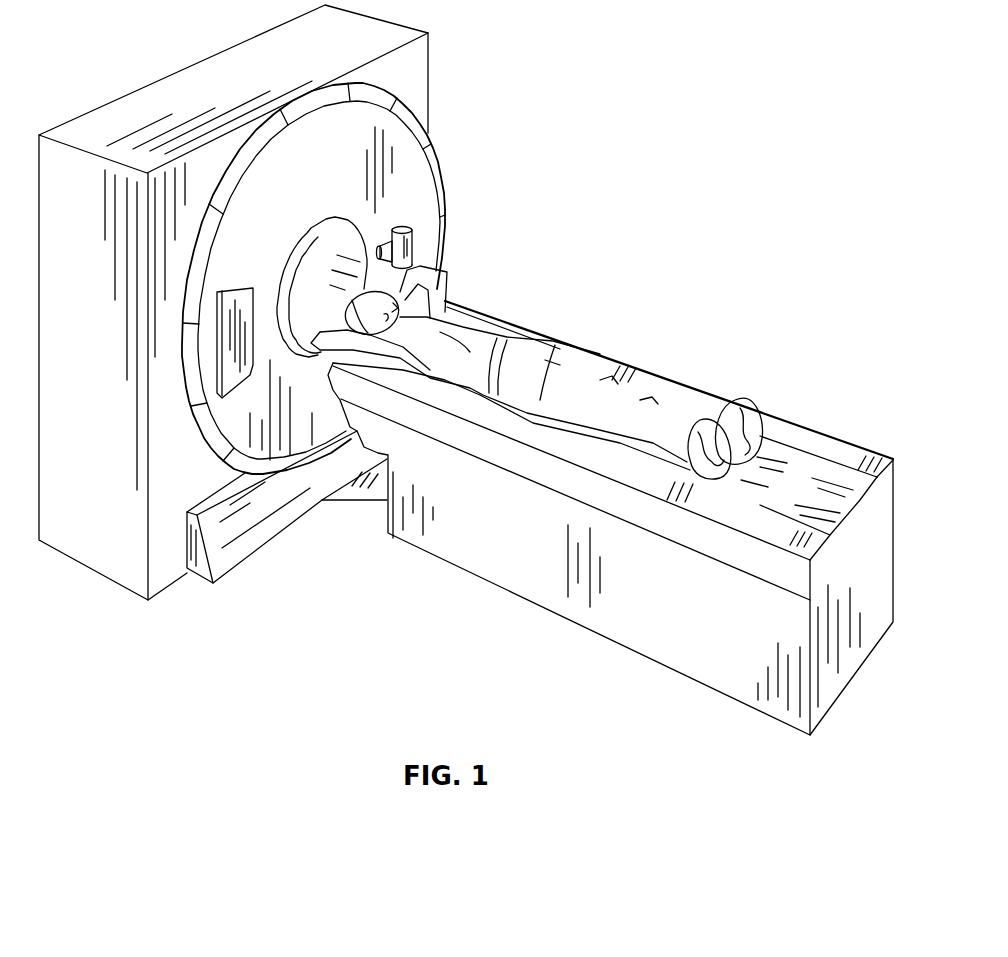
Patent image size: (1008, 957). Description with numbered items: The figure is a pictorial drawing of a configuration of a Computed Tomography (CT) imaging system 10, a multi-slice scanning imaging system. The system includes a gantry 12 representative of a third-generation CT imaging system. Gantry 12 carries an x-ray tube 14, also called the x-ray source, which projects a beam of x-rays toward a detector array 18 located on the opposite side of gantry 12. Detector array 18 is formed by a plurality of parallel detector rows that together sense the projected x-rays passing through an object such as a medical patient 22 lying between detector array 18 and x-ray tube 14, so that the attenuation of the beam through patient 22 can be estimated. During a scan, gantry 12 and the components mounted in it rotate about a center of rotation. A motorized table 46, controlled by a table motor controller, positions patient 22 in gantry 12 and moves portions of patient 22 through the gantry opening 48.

The Computed Tomography (CT) imaging system 10 is at (617, 143).
The gantry 12 is at (417, 112).
The x-ray tube 14 is at (412, 247).
The detector array 18 is at (237, 380).
The medical patient 22 is at (483, 328).
The motorized table 46 is at (493, 548).
The gantry opening 48 is at (327, 243).